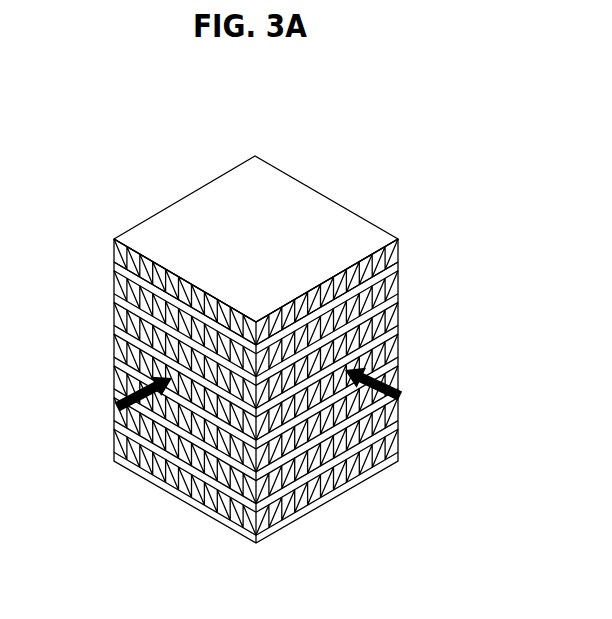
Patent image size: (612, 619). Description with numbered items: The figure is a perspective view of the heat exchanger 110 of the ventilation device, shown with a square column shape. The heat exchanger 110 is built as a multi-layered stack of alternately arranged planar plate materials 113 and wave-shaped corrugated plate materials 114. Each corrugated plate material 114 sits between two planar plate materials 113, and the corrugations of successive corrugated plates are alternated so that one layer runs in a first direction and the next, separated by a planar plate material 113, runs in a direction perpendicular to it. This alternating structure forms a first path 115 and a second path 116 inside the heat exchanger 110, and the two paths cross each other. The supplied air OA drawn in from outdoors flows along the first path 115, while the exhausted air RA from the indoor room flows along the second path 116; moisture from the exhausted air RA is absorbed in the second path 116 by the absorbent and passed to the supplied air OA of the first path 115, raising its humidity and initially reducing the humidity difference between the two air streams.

The heat exchanger 110 is at (176, 172).
The planar plate material 113 is at (135, 312).
The corrugated plate material 114 is at (116, 253).
The first path 115 is at (140, 322).
The second path 116 is at (397, 338).
The supplied air OA is at (128, 397).
The exhausted air RA is at (389, 386).